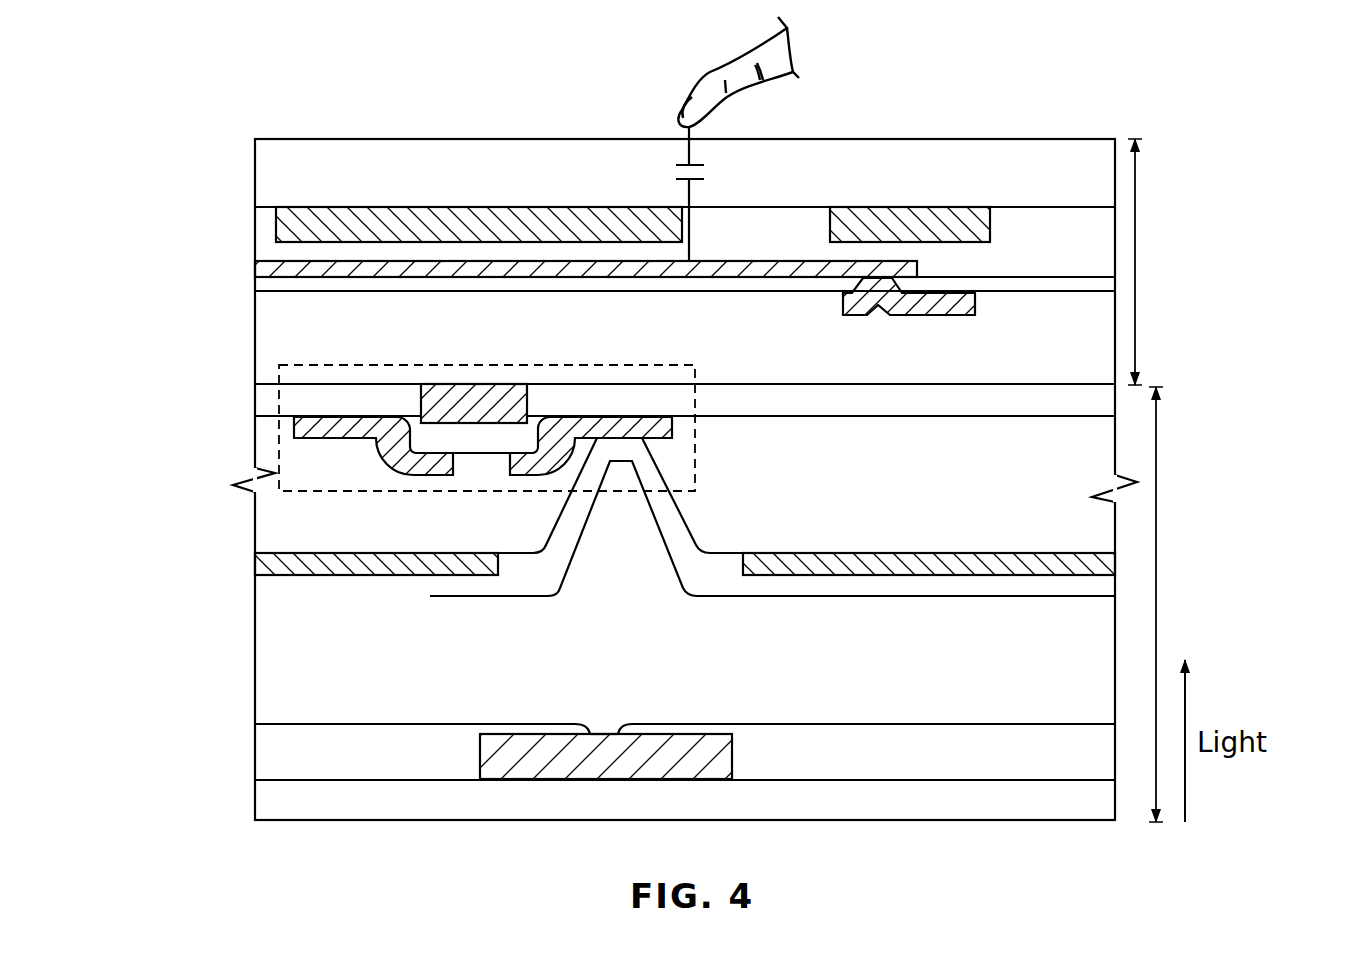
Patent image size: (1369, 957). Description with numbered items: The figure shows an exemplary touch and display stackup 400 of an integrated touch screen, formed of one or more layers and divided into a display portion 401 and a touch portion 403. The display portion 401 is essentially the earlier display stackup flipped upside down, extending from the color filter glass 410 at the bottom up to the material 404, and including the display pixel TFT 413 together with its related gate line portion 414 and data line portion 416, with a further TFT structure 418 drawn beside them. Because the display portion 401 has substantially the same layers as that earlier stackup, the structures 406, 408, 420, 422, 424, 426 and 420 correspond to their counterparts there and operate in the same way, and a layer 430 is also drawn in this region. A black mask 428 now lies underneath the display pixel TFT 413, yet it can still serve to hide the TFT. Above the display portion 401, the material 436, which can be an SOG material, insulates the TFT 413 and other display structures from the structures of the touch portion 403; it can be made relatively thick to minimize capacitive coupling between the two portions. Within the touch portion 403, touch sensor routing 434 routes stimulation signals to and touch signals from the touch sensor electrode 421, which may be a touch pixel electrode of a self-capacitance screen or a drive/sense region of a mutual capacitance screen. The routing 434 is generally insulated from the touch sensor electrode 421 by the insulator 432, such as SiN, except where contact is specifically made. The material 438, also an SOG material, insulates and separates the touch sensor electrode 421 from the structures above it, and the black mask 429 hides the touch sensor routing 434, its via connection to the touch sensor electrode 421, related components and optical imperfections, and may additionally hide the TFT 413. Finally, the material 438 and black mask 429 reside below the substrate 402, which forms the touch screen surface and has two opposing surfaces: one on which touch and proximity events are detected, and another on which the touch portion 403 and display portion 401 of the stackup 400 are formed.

The touch and display stackup 400 is at (177, 73).
The display portion 401 is at (1157, 542).
The substrate 402 is at (281, 166).
The touch portion 403 is at (1137, 215).
The material 404 is at (291, 403).
The display layer structure 406 is at (288, 523).
The display layer structure 408 is at (288, 666).
The color filter glass 410 is at (288, 809).
The display pixel TFT 413 is at (697, 366).
The gate line portion 414 is at (485, 397).
The data line portion 416 is at (412, 466).
The source/drain electrode 418 is at (670, 431).
The display layer structure 420 is at (368, 574).
The touch sensor electrode 421 is at (470, 268).
The display layer structure 422 is at (798, 598).
The display layer structure 424 is at (627, 552).
The display layer structure 426 is at (392, 742).
The black mask 428 is at (605, 740).
The black mask 429 is at (396, 215).
The insulating layer 430 is at (813, 743).
The insulator 432 is at (279, 284).
The touch sensor routing 434 is at (968, 303).
The material 436 is at (288, 341).
The material 438 is at (283, 252).